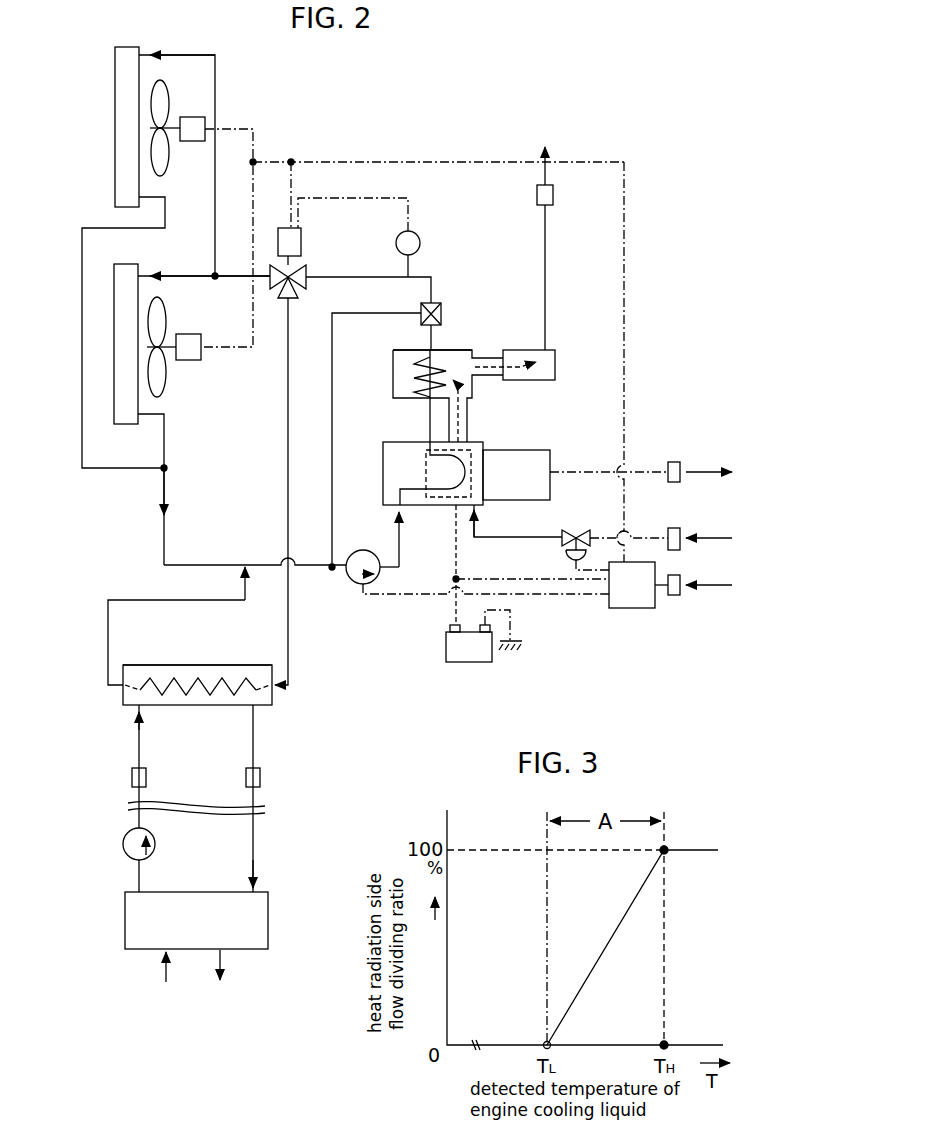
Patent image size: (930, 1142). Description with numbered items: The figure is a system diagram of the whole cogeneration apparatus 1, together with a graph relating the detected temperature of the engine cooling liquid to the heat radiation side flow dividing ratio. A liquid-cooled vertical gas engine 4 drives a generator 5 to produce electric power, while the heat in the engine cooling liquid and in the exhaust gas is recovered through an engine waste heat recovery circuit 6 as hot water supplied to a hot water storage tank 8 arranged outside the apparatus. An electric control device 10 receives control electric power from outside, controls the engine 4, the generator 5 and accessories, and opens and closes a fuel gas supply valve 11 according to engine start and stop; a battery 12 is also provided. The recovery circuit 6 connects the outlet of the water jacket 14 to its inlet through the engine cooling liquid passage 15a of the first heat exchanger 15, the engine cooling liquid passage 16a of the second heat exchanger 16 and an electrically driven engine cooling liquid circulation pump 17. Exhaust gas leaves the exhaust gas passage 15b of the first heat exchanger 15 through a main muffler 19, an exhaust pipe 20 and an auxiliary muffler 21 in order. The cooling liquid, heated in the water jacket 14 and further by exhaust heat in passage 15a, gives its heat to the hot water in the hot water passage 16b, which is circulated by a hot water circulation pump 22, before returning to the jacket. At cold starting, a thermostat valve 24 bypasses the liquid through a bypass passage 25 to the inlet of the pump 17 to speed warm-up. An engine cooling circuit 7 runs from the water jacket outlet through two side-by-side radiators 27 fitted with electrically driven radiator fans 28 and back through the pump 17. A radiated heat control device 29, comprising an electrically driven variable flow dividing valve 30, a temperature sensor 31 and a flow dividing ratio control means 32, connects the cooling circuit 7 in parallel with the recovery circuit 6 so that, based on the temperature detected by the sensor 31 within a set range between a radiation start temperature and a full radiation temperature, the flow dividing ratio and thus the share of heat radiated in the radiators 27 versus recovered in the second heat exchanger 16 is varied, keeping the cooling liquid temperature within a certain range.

The cogeneration apparatus 1 is at (664, 172).
The liquid-cooled vertical gas engine 4 is at (427, 494).
The generator 5 is at (515, 502).
The engine waste heat recovery circuit 6 is at (286, 420).
The engine cooling circuit 7 is at (243, 282).
The hot water storage tank 8 is at (125, 928).
The electric control device 10 is at (633, 608).
The fuel gas supply valve 11 is at (578, 530).
The battery 12 is at (446, 647).
The water jacket 14 is at (470, 450).
The first heat exchanger 15 is at (438, 392).
The engine cooling liquid passage 15a is at (425, 386).
The exhaust gas passage 15b is at (394, 362).
The second heat exchanger 16 is at (190, 656).
The engine cooling liquid passage 16a is at (198, 697).
The hot water passage 16b is at (231, 676).
The engine cooling liquid circulation pump 17 is at (363, 550).
The main muffler 19 is at (548, 381).
The exhaust pipe 20 is at (545, 283).
The auxiliary muffler 21 is at (553, 195).
The hot water circulation pump 22 is at (156, 846).
The thermostat valve 24 is at (441, 313).
The bypass passage 25 is at (332, 440).
The radiator 27 is at (115, 150).
The radiator fan 28 is at (168, 92).
The radiated heat control device 29 is at (340, 229).
The variable flow dividing valve 30 is at (294, 296).
The temperature sensor 31 is at (419, 240).
The flow dividing ratio control means 32 is at (301, 243).